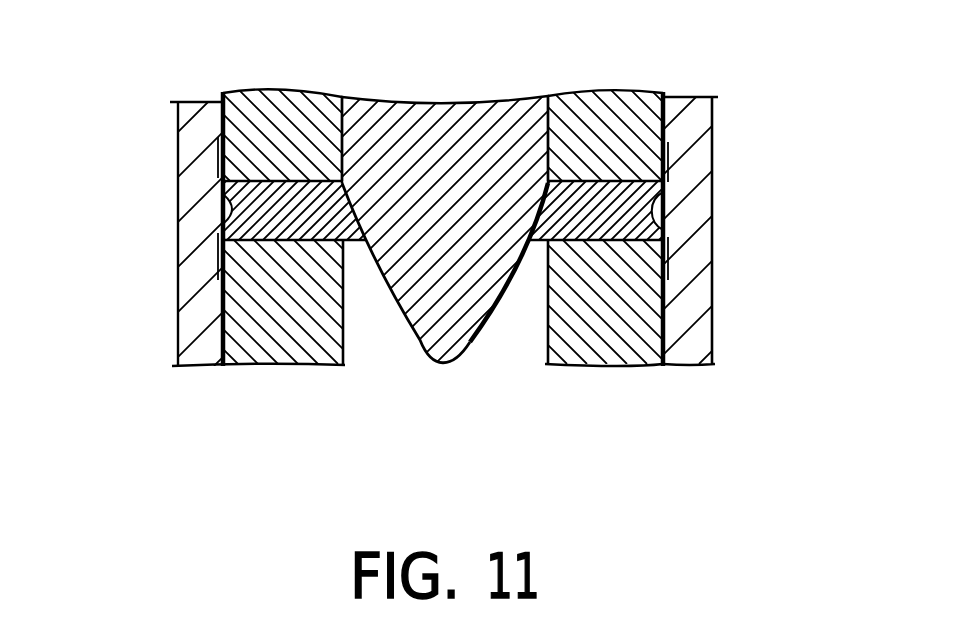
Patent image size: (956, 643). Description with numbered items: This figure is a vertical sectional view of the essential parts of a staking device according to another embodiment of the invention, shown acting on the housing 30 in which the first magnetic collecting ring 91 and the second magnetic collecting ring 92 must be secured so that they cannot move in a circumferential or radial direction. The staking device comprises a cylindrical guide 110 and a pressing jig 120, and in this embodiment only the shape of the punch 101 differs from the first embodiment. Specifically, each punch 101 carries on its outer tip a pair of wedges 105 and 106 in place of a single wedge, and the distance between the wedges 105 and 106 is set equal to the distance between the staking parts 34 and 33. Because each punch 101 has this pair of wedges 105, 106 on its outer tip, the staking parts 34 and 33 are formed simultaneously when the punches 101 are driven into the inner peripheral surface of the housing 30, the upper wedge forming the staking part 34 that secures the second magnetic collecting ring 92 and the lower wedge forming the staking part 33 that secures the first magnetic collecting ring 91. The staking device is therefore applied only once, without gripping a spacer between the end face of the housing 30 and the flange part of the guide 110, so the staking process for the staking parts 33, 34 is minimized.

The housing 30 is at (687, 353).
The staking part 33 is at (214, 233).
The staking part 34 is at (216, 184).
The first magnetic collecting ring 91 is at (214, 278).
The second magnetic collecting ring 92 is at (219, 146).
The punch 101 is at (226, 212).
The wedge 105 is at (667, 232).
The wedge 106 is at (665, 191).
The guide 110 is at (611, 363).
The pressing jig 120 is at (451, 348).